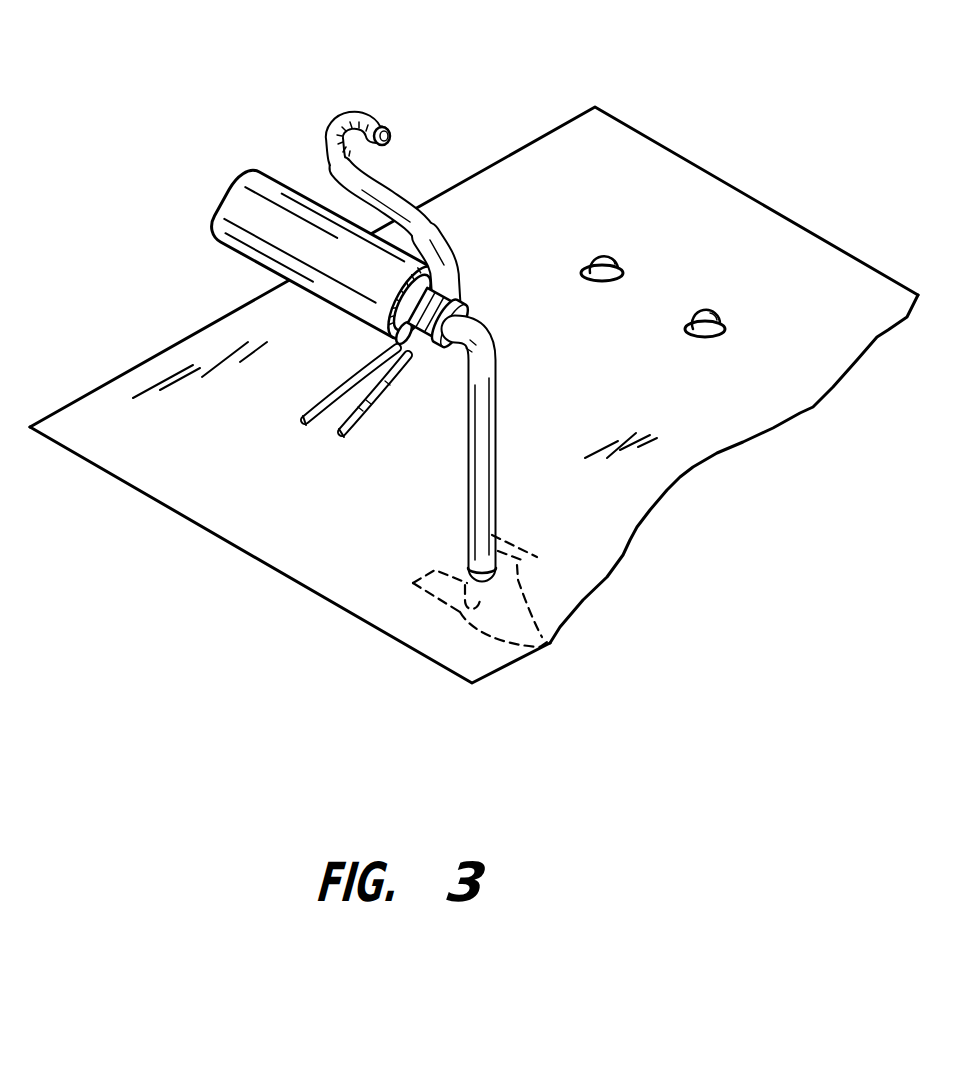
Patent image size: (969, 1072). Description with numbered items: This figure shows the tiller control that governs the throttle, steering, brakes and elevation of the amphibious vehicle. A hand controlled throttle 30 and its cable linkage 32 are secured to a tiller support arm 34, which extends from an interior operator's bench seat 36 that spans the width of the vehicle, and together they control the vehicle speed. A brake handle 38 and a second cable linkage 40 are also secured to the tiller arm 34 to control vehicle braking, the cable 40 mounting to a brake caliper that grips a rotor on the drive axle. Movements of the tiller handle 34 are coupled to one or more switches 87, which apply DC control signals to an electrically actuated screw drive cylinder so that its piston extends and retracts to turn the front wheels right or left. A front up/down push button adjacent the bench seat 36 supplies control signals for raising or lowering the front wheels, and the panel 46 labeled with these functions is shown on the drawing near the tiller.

The hand controlled throttle 30 is at (218, 228).
The cable linkage 32 is at (298, 421).
The tiller support arm 34 is at (497, 370).
The operator's bench seat 36 is at (270, 538).
The brake handle 38 is at (359, 105).
The cable linkage 40 is at (341, 436).
The control panel 46 is at (730, 184).
The switches 87 is at (535, 652).